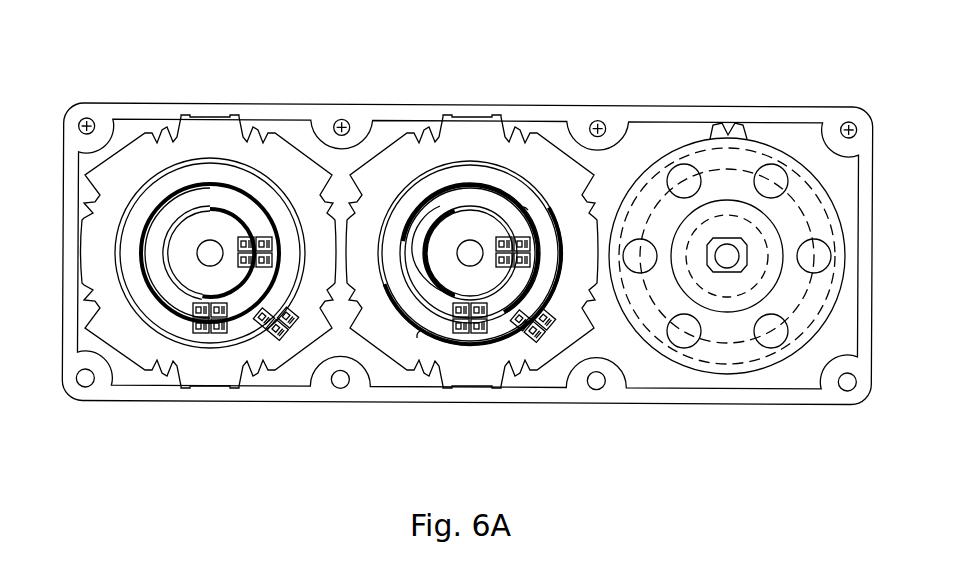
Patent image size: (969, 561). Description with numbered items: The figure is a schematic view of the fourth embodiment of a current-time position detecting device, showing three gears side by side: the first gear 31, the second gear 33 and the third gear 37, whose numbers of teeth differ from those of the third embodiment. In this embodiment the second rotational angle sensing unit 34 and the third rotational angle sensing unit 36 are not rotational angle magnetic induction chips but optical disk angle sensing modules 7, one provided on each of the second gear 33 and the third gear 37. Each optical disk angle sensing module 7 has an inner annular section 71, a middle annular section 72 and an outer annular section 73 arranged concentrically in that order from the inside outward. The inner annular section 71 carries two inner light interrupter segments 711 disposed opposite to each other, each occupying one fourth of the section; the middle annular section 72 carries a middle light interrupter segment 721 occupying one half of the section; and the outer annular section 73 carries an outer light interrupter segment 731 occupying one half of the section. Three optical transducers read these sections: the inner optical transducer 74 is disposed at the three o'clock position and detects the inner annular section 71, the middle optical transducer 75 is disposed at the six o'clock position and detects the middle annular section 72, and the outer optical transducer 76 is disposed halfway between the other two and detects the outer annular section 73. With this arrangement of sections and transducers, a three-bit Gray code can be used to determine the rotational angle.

The first gear 31 is at (768, 150).
The second gear 33 is at (542, 150).
The second rotational angle sensing unit 34 is at (515, 348).
The third rotational angle sensing unit 36 is at (240, 356).
The third gear 37 is at (213, 133).
The optical disk angle sensing module 7 is at (368, 256).
The inner annular section 71 is at (443, 200).
The inner light interrupter segment 711 is at (413, 215).
The middle annular section 72 is at (470, 170).
The middle light interrupter segment 721 is at (528, 210).
The outer annular section 73 is at (506, 150).
The outer light interrupter segment 731 is at (422, 332).
The inner optical transducer 74 is at (530, 258).
The middle optical transducer 75 is at (453, 334).
The outer optical transducer 76 is at (540, 338).